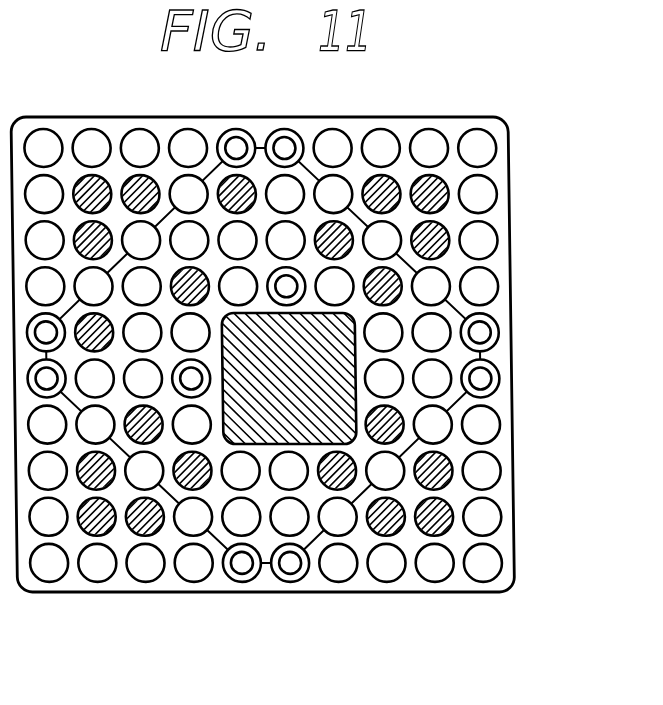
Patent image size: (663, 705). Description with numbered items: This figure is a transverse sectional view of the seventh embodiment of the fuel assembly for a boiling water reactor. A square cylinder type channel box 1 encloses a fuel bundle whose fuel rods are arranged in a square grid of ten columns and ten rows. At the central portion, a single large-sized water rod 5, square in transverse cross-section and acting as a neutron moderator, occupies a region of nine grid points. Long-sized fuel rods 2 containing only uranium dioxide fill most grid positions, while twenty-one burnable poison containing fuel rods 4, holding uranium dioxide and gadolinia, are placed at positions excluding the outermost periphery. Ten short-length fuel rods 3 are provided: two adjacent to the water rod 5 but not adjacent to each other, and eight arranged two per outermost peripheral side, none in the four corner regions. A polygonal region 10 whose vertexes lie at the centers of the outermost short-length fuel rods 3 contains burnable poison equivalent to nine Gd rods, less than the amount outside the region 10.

The channel box 1 is at (509, 178).
The fuel rod 2 is at (497, 238).
The short-length fuel rod 3 is at (478, 332).
The burnable poison containing fuel rod 4 is at (447, 458).
The large-sized water rod 5 is at (263, 420).
The region 10 is at (166, 218).